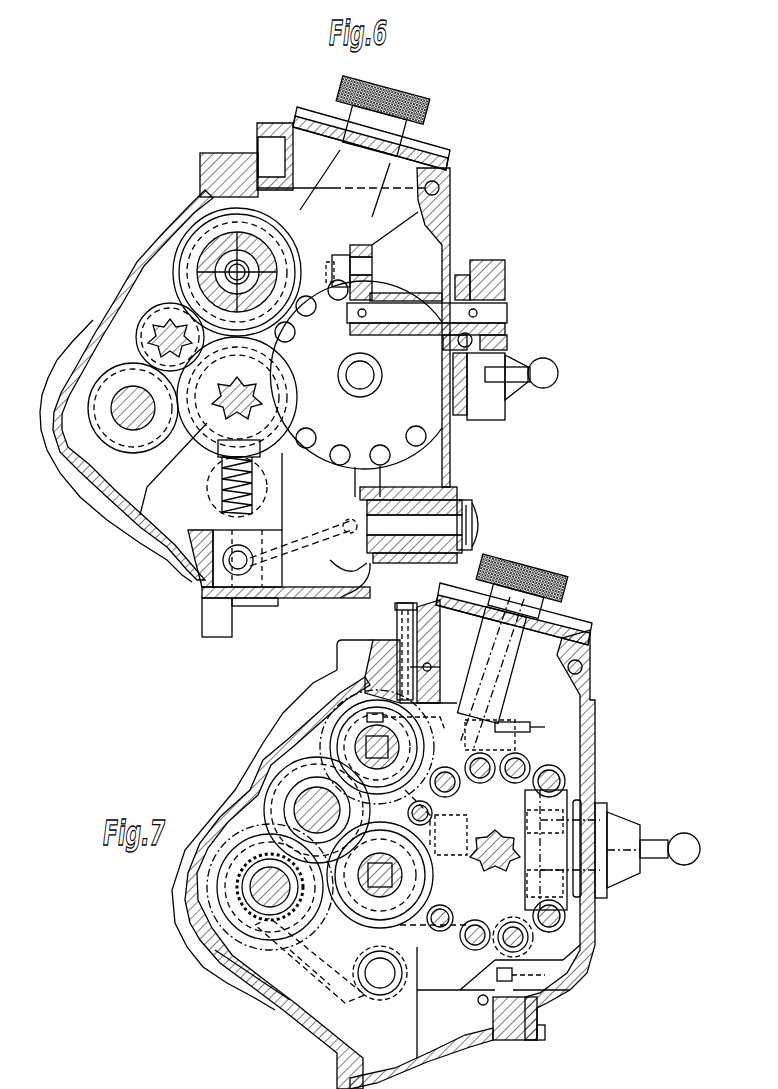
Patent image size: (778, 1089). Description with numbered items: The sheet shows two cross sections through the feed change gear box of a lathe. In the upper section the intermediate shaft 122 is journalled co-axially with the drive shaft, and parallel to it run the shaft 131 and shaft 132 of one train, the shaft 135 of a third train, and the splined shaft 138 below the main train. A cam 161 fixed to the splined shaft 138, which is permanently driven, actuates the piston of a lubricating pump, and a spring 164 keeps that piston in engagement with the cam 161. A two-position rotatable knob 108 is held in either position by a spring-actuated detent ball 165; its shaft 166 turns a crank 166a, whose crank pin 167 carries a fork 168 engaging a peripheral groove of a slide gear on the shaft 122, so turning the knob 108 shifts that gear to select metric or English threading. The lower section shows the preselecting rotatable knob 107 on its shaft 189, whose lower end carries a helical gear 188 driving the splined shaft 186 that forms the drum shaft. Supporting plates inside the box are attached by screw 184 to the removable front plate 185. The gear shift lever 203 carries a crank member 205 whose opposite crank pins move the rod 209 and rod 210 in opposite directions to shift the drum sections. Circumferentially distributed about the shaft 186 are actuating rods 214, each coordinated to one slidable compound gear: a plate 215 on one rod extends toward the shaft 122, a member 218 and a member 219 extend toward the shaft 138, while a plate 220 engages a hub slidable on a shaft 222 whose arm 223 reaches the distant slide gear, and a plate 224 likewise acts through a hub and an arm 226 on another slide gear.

In FIG. 6, the rotatable knob 107 is at (421, 103).
In FIG. 7, the rotatable knob 107 is at (568, 585).
In FIG. 6, the rotatable knob 108 is at (506, 285).
In FIG. 6, the shaft 122 is at (236, 271).
In FIG. 7, the shaft 122 is at (372, 748).
In FIG. 6, the shaft 131 is at (168, 339).
In FIG. 7, the shaft 132 is at (300, 802).
In FIG. 6, the shaft 135 is at (122, 425).
In FIG. 7, the shaft 135 is at (258, 895).
In FIG. 6, the splined shaft 138 is at (238, 392).
In FIG. 7, the splined shaft 138 is at (376, 890).
In FIG. 6, the cam 161 is at (206, 428).
In FIG. 6, the spring 164 is at (220, 488).
In FIG. 6, the spring-actuated detent ball 165 is at (460, 341).
In FIG. 6, the shaft 166 is at (508, 313).
In FIG. 6, the crank 166a is at (373, 256).
In FIG. 6, the crank pin 167 is at (346, 262).
In FIG. 6, the fork 168 is at (336, 262).
In FIG. 7, the screw 184 is at (530, 724).
In FIG. 7, the removable front plate 185 is at (590, 942).
In FIG. 7, the splined shaft 186 is at (495, 864).
In FIG. 7, the helical gear 188 is at (453, 848).
In FIG. 7, the shaft 189 is at (540, 609).
In FIG. 7, the gear shift lever 203 is at (655, 860).
In FIG. 7, the crank member 205 is at (527, 825).
In FIG. 7, the rod 209 is at (562, 782).
In FIG. 7, the rod 210 is at (563, 917).
In FIG. 7, the actuating rods 214 is at (492, 772).
In FIG. 7, the plate 215 is at (385, 704).
In FIG. 7, the member 218 is at (415, 830).
In FIG. 7, the member 219 is at (440, 930).
In FIG. 7, the plate 220 is at (445, 975).
In FIG. 7, the shaft 222 is at (382, 990).
In FIG. 7, the arm 223 is at (340, 998).
In FIG. 7, the plate 224 is at (490, 970).
In FIG. 7, the arm 226 is at (325, 978).